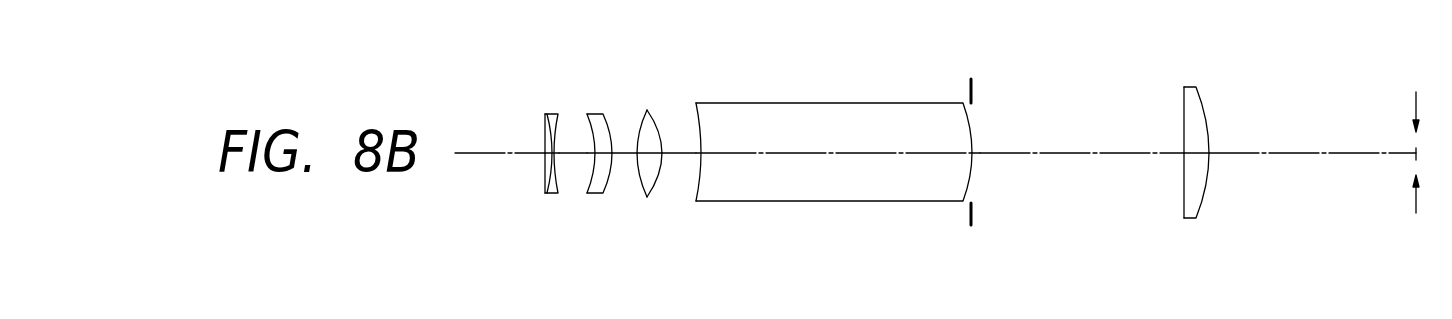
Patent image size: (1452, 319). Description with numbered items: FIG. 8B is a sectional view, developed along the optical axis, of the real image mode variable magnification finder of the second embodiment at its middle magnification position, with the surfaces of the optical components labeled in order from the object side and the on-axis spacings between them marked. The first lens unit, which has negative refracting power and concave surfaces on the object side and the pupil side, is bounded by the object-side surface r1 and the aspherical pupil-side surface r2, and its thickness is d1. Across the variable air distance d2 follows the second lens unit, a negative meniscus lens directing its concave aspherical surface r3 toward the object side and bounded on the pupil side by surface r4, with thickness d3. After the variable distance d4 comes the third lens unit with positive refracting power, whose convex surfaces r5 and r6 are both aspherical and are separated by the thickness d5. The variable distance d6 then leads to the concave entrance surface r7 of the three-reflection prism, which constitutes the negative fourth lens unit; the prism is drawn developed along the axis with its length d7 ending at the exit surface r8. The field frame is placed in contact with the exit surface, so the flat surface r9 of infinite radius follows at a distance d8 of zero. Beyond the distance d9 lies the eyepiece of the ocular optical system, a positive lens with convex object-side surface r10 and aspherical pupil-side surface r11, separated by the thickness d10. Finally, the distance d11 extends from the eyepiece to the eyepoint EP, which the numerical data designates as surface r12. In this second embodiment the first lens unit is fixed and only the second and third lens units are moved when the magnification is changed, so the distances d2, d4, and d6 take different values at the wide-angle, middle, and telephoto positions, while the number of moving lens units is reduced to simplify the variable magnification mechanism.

The object-side surface of first lens unit r1 is at (545, 128).
The pupil-side surface of first lens unit r2 is at (556, 128).
The object-side surface of second lens unit r3 is at (587, 118).
The pupil-side surface of second lens unit r4 is at (610, 132).
The object-side surface of third lens unit r5 is at (639, 117).
The pupil-side surface of third lens unit r6 is at (660, 123).
The entrance surface of prism r7 is at (697, 105).
The exit surface of prism r8 is at (963, 103).
The field frame surface r9 is at (971, 80).
The object-side surface of eyepiece r10 is at (1184, 118).
The pupil-side surface of eyepiece r11 is at (1205, 112).
The eyepoint surface r12 is at (1414, 113).
The thickness of first lens unit d1 is at (553, 153).
The distance between first and second lens units d2 is at (578, 155).
The thickness of second lens unit d3 is at (593, 153).
The distance between second and third lens units d4 is at (622, 155).
The thickness of third lens unit d5 is at (649, 153).
The distance between third lens unit and prism d6 is at (678, 155).
The thickness of prism d7 is at (809, 153).
The distance between prism exit surface and field frame d8 is at (972, 155).
The distance between field frame and eyepiece d9 is at (1081, 153).
The thickness of eyepiece d10 is at (1191, 153).
The distance between eyepiece and eyepoint d11 is at (1293, 153).
The eyepoint EP is at (1418, 170).